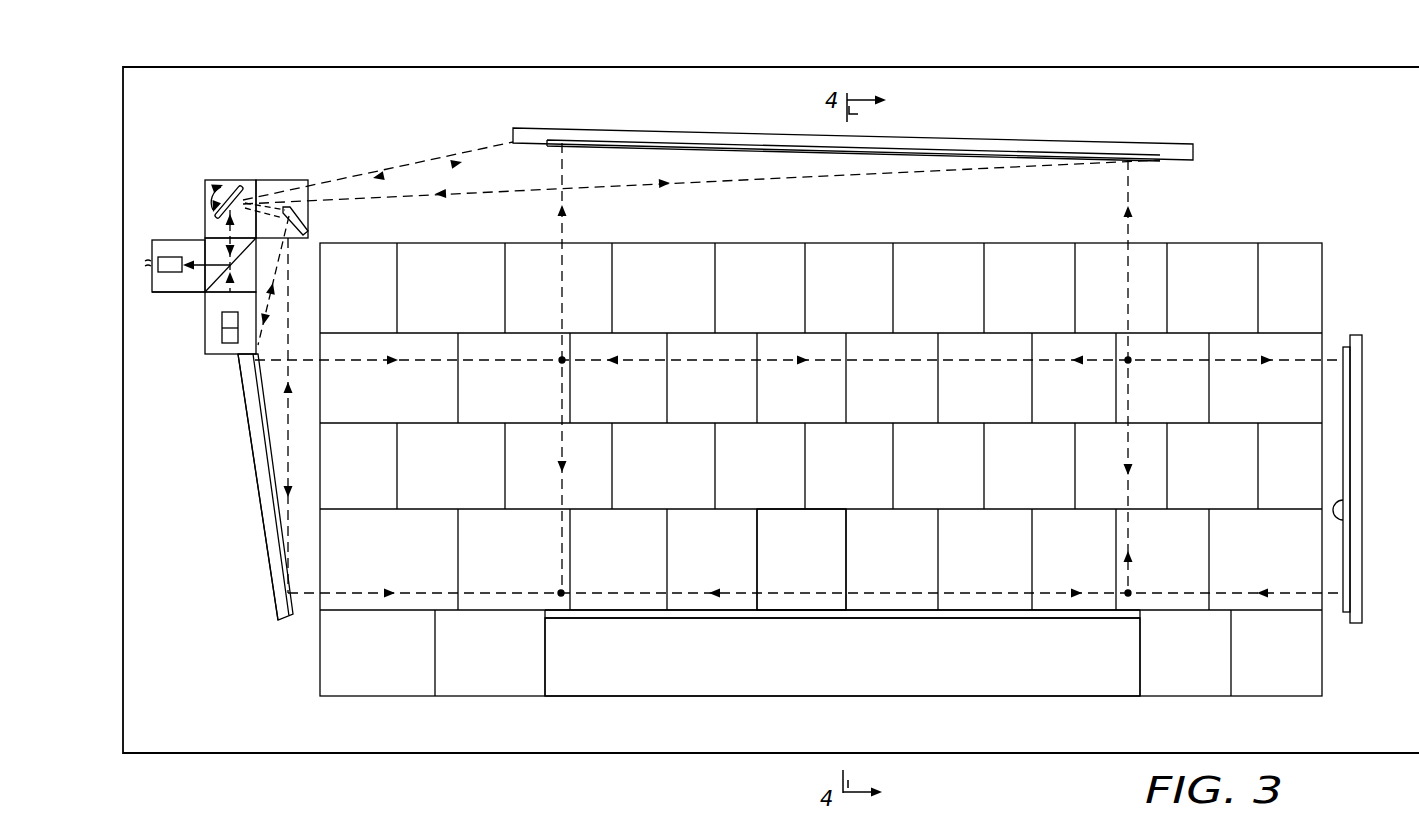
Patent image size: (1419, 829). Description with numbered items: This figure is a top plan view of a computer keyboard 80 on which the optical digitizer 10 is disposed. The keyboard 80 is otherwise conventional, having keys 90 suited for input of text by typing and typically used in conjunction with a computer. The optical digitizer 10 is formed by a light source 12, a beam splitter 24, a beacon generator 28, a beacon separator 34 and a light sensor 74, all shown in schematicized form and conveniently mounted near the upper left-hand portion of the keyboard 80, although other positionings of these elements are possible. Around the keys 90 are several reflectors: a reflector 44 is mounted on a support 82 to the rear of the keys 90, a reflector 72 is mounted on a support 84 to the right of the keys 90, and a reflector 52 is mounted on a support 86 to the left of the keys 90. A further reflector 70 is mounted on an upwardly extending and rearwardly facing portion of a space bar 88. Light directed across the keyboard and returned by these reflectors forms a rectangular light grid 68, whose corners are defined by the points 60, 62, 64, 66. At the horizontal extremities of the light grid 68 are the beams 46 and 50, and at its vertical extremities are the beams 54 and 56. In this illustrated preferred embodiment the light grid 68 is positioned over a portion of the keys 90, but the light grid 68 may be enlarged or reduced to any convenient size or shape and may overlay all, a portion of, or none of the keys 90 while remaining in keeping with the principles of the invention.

The optical digitizer 10 is at (336, 131).
The light source 12 is at (216, 364).
The beam splitter 24 is at (210, 250).
The beacon generator 28 is at (219, 173).
The beacon separator 34 is at (278, 173).
The reflector 44 is at (700, 150).
The beam 46 is at (566, 222).
The beam 50 is at (1125, 192).
The reflector 52 is at (250, 412).
The beam 54 is at (428, 591).
The beam 56 is at (430, 362).
The point 60 is at (558, 363).
The point 62 is at (1131, 364).
The point 64 is at (558, 591).
The point 66 is at (1131, 591).
The light grid 68 is at (830, 498).
The reflector 70 is at (886, 608).
The reflector 72 is at (1340, 510).
The light sensor 74 is at (176, 302).
The computer keyboard 80 is at (1028, 62).
The support 82 is at (646, 128).
The support 84 is at (1363, 408).
The support 86 is at (260, 533).
The space bar 88 is at (1090, 692).
The keys 90 is at (1213, 243).